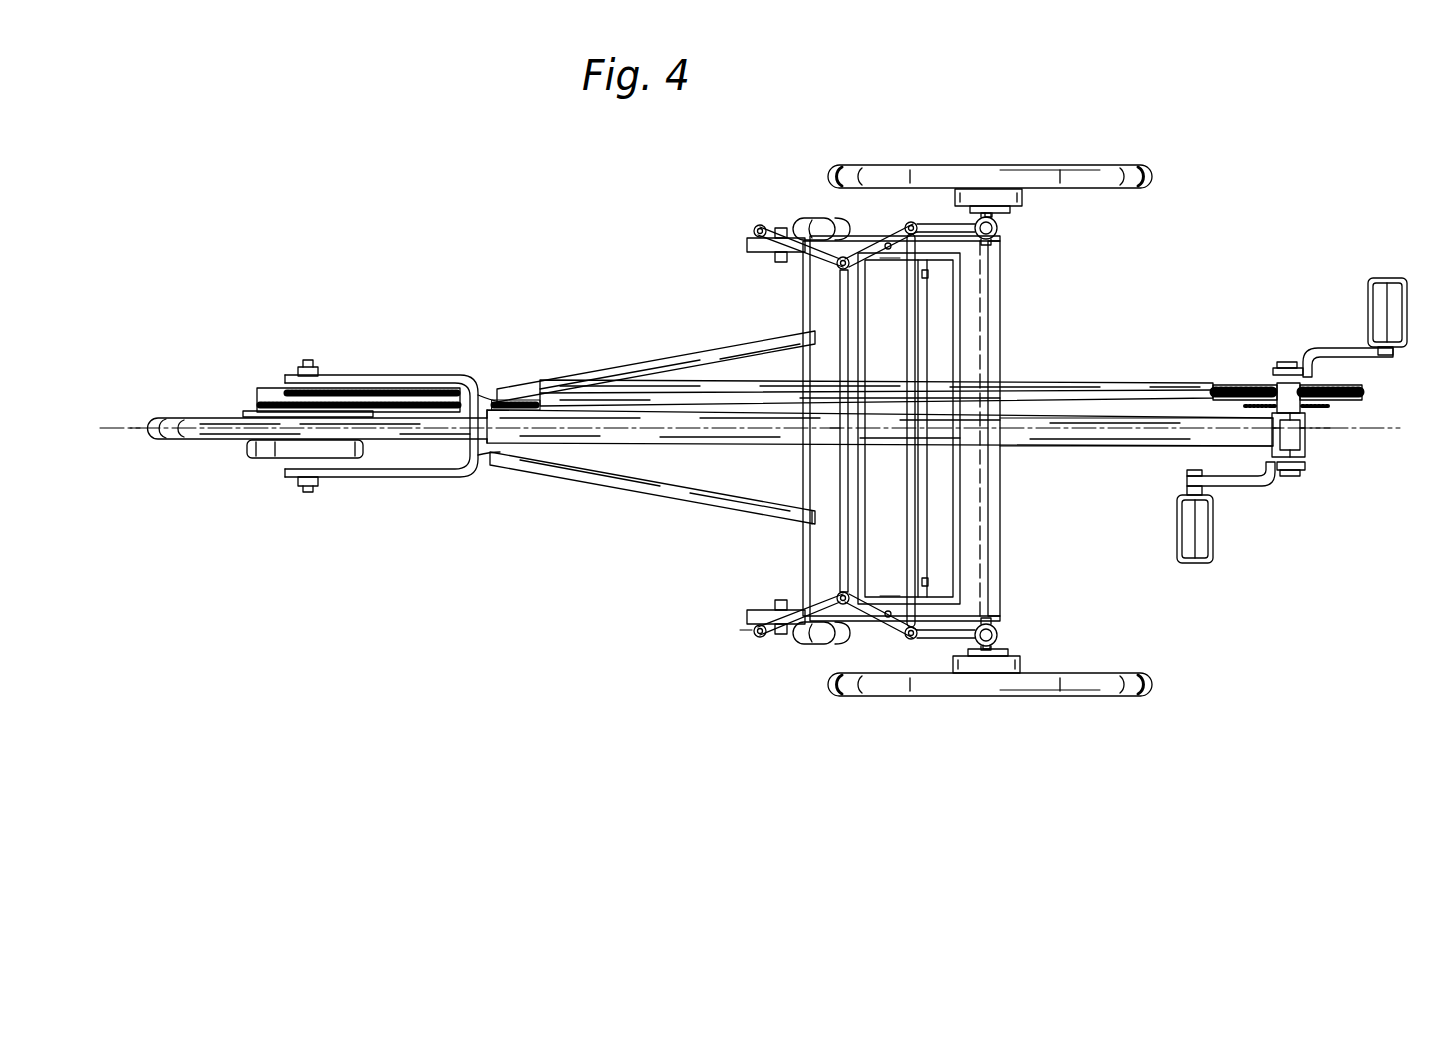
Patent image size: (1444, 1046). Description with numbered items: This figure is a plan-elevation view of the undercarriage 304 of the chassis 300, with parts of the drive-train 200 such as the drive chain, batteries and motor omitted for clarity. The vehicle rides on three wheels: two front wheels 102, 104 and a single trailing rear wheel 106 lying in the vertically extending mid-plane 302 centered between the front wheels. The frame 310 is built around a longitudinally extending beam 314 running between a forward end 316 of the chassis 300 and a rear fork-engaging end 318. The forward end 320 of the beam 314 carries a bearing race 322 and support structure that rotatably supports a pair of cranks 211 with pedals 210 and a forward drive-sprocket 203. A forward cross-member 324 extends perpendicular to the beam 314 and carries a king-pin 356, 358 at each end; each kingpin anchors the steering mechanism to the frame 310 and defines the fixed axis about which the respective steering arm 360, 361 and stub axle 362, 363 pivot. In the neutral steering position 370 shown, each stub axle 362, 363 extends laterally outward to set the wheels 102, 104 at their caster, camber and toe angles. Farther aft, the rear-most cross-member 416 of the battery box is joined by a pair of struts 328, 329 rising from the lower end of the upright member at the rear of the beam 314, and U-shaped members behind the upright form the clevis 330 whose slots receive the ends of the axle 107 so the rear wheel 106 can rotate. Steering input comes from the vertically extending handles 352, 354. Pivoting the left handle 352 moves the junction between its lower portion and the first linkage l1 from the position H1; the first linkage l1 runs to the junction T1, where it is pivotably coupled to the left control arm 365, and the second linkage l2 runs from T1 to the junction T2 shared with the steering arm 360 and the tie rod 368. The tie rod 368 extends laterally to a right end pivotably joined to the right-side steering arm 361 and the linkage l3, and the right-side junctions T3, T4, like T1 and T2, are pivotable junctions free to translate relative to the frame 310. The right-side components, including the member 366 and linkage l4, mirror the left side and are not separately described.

The front wheel 102 is at (1140, 692).
The front wheel 104 is at (1153, 165).
The rear wheel 106 is at (242, 500).
The axle 107 is at (305, 366).
The drive-train 200 is at (1218, 376).
The forward drive-sprocket 203 is at (1335, 383).
The pedals 210 is at (1385, 277).
The cranks 211 is at (1357, 348).
The chassis 300 is at (600, 572).
The vertically extending mid-plane 302 is at (122, 427).
The undercarriage 304 is at (1072, 360).
The frame 310 is at (597, 315).
The longitudinally extending beam 314 is at (1022, 447).
The forward end 316 is at (1328, 510).
The rear fork-engaging end 318 is at (485, 481).
The forward end of the beam 320 is at (1210, 444).
The bearing race 322 is at (1312, 442).
The forward cross-member 324 is at (990, 290).
The strut 328 is at (617, 482).
The strut 329 is at (625, 368).
The clevis 330 is at (368, 364).
The handle 352 is at (815, 647).
The handle 354 is at (795, 220).
The king-pin 356 is at (998, 630).
The king-pin 358 is at (998, 236).
The steering arm 360 is at (905, 672).
The steering arm 361 is at (930, 224).
The stub axle 362 is at (1005, 636).
The stub axle 363 is at (1010, 202).
The left control arm 365 is at (915, 590).
The upper link 366 is at (870, 260).
The tie rod 368 is at (908, 497).
The neutral steering position 370 is at (1072, 150).
The cross-member 416 is at (815, 522).
The junction T1 is at (838, 598).
The junction T2 is at (905, 636).
The junction T3 is at (908, 222).
The junction T4 is at (840, 265).
The first linkage l1 is at (755, 628).
The second linkage l2 is at (858, 596).
The linkage l3 is at (887, 243).
The link l4 is at (755, 232).
The junction position H1 is at (753, 634).